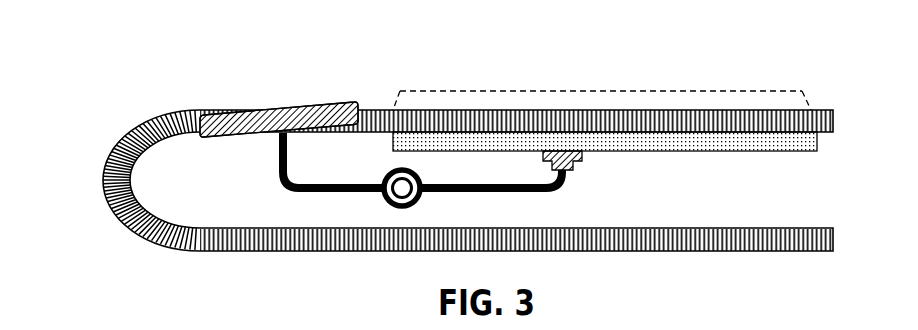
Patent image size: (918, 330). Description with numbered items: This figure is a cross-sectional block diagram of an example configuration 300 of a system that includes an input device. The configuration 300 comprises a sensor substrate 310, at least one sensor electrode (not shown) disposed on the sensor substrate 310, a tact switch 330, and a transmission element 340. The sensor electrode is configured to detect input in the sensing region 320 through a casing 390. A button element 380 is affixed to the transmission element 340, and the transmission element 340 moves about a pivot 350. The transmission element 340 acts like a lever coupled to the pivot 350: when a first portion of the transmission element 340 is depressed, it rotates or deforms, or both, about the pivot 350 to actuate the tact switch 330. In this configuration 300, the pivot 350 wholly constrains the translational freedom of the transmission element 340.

The example configuration 300 is at (120, 62).
The sensor substrate 310 is at (775, 160).
The sensing region 320 is at (572, 100).
The tact switch 330 is at (588, 157).
The transmission element 340 is at (568, 191).
The pivot 350 is at (362, 200).
The button element 380 is at (282, 110).
The casing 390 is at (153, 102).